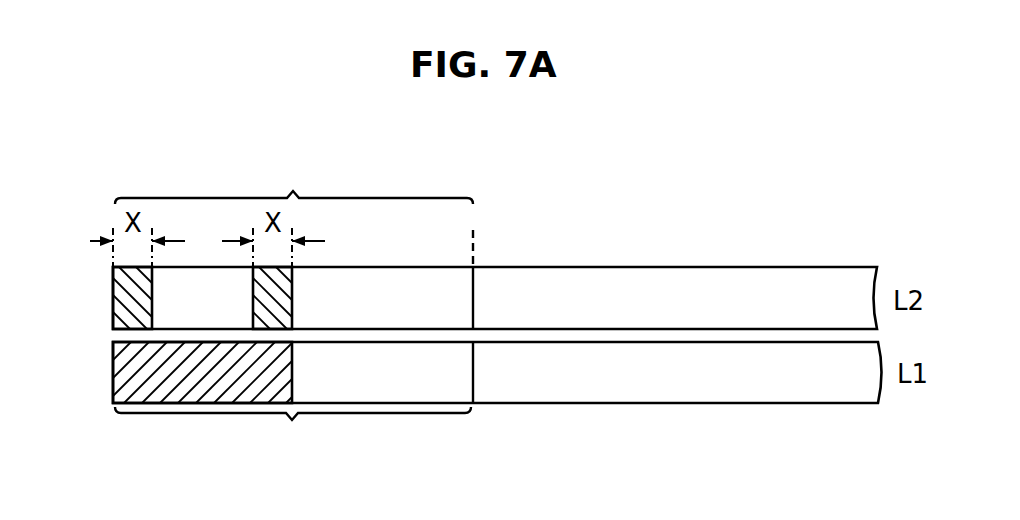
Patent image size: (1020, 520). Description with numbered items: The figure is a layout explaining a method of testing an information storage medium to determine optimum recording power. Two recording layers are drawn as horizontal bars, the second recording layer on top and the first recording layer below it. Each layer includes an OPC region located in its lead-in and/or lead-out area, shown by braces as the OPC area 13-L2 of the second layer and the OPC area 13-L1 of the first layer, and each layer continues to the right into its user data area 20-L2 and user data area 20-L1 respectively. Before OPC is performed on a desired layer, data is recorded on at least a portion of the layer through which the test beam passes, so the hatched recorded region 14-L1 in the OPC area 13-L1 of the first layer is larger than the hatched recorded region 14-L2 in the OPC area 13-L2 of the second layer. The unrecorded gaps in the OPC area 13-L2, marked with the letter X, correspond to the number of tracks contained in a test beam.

The OPC region of second recording layer 13-L2 is at (294, 181).
The OPC region of first recording layer 13-L1 is at (293, 431).
The recorded region in OPC area of second recording layer 14-L2 is at (202, 297).
The recorded region in OPC area of first recording layer 14-L1 is at (125, 378).
The user data area of second recording layer 20-L2 is at (660, 288).
The user data area of first recording layer 20-L1 is at (658, 385).